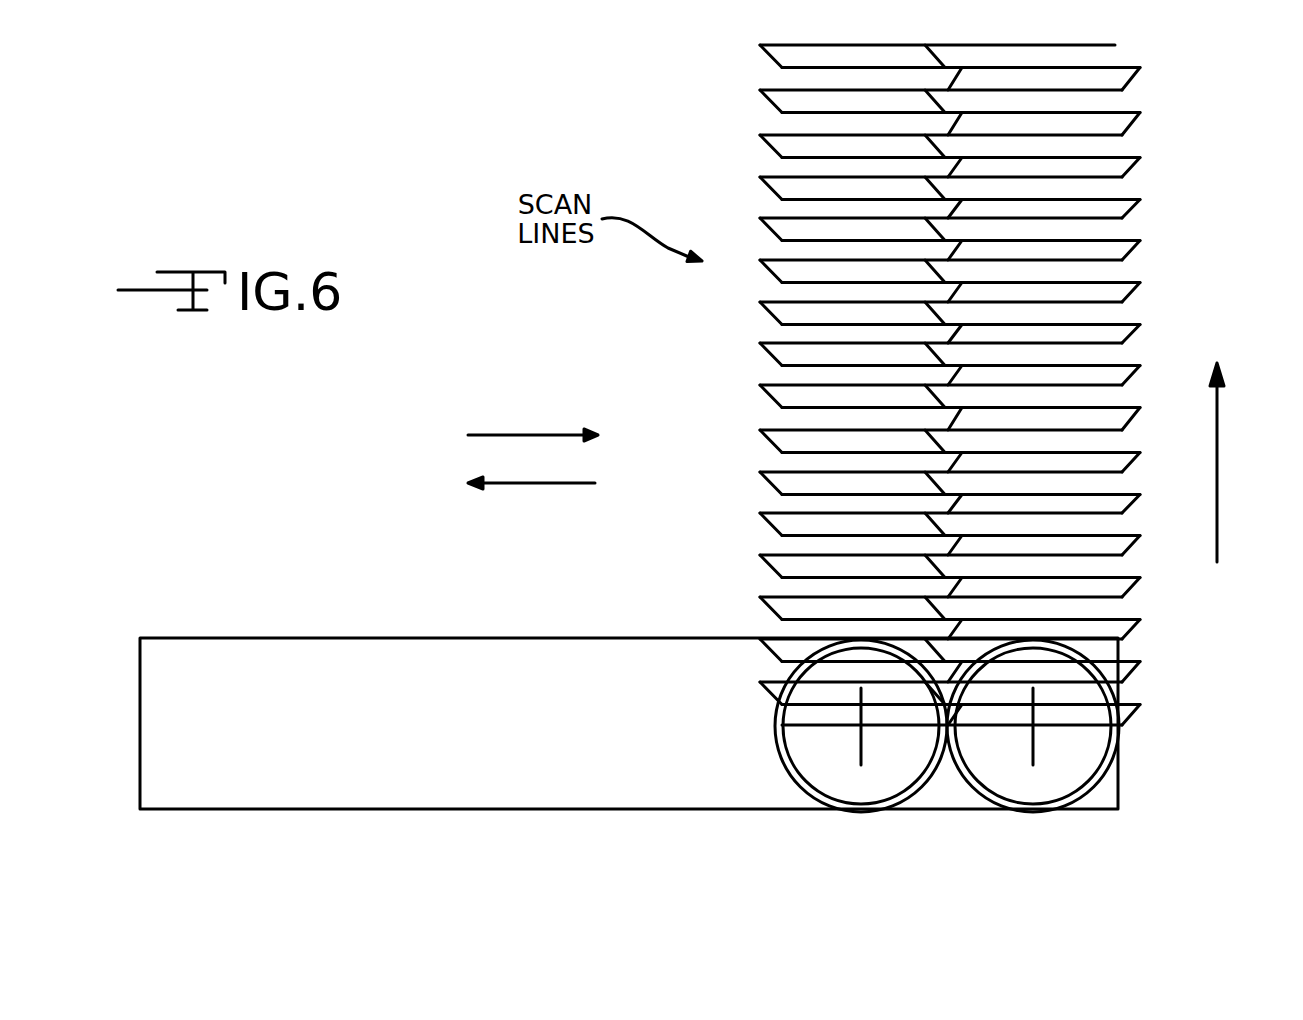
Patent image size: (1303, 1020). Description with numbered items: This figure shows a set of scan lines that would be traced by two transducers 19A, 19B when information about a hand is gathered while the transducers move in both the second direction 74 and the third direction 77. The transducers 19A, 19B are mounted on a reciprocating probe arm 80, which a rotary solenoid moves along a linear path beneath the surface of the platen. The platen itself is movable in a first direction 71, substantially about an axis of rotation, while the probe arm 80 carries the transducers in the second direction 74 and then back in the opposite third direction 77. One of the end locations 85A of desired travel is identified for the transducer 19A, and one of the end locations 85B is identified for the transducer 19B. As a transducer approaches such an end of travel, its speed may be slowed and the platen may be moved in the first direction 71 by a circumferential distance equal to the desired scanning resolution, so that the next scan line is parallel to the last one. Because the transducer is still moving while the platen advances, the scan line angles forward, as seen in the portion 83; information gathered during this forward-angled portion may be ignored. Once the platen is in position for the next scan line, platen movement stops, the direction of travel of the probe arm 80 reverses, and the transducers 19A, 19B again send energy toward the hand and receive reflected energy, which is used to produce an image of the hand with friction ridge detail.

The scan line portion angled forward 83 is at (936, 53).
The end location 85A is at (948, 302).
The end location 85B is at (945, 282).
The probe arm 80 is at (410, 811).
The transducer 19A is at (803, 784).
The transducer 19B is at (976, 790).
The third direction 77 is at (532, 435).
The second direction 74 is at (507, 484).
The first direction 71 is at (1218, 445).